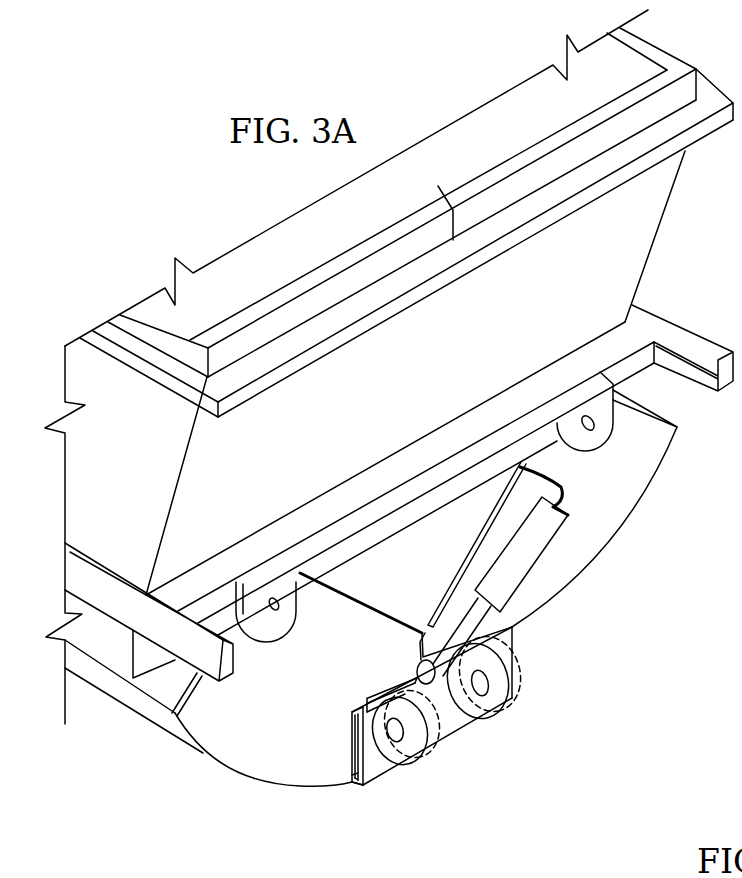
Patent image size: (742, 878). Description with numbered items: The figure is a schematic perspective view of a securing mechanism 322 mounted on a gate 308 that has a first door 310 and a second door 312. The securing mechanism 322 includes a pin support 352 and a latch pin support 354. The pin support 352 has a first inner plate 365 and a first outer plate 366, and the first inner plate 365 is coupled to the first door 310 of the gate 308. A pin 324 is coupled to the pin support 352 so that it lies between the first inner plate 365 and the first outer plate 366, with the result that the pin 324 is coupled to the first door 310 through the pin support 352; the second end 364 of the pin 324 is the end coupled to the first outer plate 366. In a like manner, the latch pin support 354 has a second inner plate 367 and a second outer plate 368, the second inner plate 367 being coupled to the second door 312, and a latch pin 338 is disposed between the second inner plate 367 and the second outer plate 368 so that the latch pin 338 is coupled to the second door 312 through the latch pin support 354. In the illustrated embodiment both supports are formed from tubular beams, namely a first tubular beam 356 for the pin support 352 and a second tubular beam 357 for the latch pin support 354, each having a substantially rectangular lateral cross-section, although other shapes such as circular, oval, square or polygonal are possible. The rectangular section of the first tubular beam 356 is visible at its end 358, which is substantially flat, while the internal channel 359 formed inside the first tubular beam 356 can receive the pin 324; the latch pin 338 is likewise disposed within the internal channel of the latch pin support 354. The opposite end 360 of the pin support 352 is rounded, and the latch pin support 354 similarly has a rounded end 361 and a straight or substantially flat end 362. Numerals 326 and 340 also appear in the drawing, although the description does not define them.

The gate 308 is at (217, 782).
The first door 310 is at (135, 717).
The second door 312 is at (660, 457).
The securing mechanism 322 is at (530, 630).
The pin 324 is at (406, 762).
The second pin 326 is at (458, 754).
The latch pin 338 is at (452, 624).
The actuator cylinder 340 is at (548, 528).
The pin support 352 is at (358, 786).
The latch pin support 354 is at (514, 699).
The first tubular beam 356 is at (367, 791).
The second tubular beam 357 is at (522, 708).
The end of first tubular beam 358 is at (354, 724).
The internal channel 359 is at (353, 736).
The rounded end of pin support 360 is at (440, 736).
The rounded end of latch pin support 361 is at (450, 718).
The flat end of latch pin support 362 is at (516, 647).
The second end of pin 364 is at (397, 695).
The first inner plate 365 is at (366, 697).
The first outer plate 366 is at (354, 766).
The second inner plate 367 is at (481, 640).
The second outer plate 368 is at (519, 683).